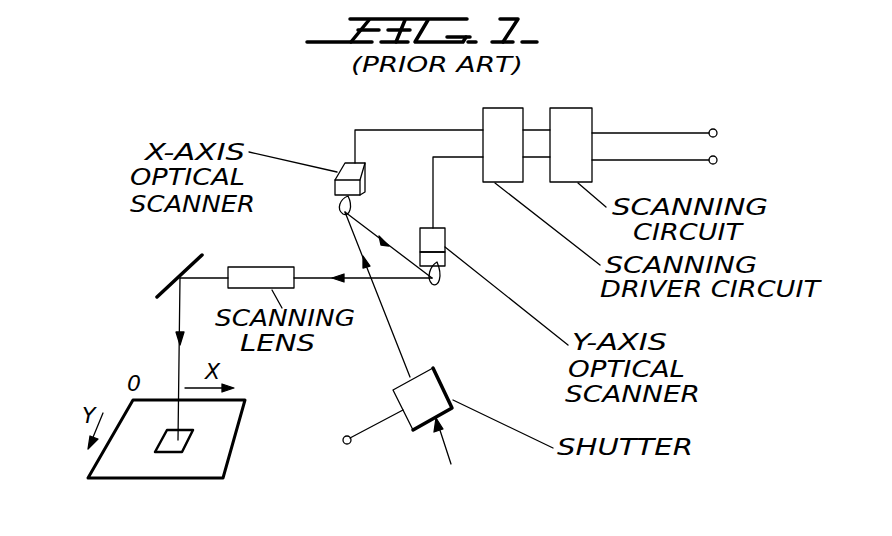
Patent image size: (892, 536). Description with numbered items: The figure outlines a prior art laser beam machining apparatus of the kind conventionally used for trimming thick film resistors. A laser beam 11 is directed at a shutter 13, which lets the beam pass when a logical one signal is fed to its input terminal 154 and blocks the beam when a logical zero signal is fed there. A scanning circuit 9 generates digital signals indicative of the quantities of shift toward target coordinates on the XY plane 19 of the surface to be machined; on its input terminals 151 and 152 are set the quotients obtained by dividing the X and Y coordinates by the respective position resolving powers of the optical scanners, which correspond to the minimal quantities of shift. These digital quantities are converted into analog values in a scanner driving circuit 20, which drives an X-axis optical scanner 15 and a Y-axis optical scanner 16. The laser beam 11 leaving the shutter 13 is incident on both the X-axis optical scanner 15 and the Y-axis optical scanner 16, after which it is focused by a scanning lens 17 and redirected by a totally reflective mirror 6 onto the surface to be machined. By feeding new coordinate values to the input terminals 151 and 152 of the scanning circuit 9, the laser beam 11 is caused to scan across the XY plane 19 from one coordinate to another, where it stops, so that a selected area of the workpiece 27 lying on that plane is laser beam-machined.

The totally reflective mirror 6 is at (185, 265).
The scanning circuit 9 is at (580, 160).
The laser beam 11 is at (443, 446).
The shutter 13 is at (447, 380).
The X-axis optical scanner 15 is at (368, 178).
The Y-axis optical scanner 16 is at (420, 236).
The scanning lens 17 is at (278, 267).
The XY plane 19 is at (226, 424).
The scanner driving circuit 20 is at (516, 160).
The workpiece 27 is at (162, 435).
The input terminal 151 is at (717, 131).
The input terminal 152 is at (717, 160).
The input terminal 154 is at (343, 443).